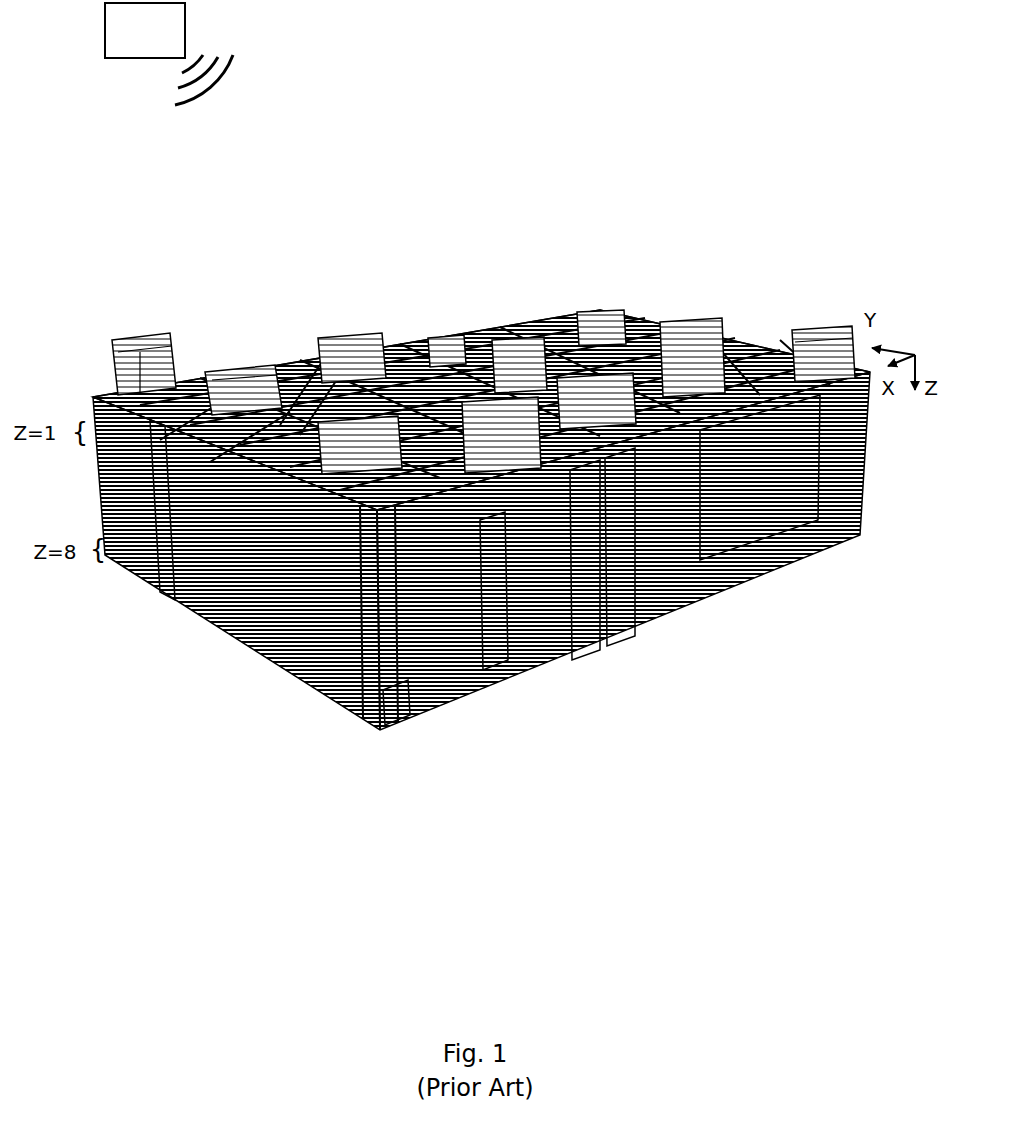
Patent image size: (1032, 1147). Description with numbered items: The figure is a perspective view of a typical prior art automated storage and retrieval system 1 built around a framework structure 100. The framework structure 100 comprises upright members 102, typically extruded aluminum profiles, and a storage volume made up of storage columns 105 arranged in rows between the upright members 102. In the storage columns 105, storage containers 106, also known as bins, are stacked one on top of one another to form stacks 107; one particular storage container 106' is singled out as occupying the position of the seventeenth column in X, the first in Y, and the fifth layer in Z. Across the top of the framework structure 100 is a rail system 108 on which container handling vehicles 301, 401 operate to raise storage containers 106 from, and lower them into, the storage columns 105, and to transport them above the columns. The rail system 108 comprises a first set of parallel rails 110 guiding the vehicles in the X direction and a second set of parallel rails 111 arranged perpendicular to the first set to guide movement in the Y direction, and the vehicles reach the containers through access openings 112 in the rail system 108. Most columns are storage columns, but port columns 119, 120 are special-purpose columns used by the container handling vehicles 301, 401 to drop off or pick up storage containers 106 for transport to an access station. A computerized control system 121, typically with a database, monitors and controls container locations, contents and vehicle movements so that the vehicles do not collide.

The automated storage and retrieval system 1 is at (152, 212).
The framework structure 100 is at (589, 246).
The upright members 102 is at (320, 683).
The storage columns 105 is at (208, 617).
The storage containers 106 is at (446, 757).
The storage container 106' is at (517, 633).
The stacks 107 is at (722, 452).
The rail system 108 is at (650, 335).
The first set of parallel rails 110 is at (278, 363).
The second set of parallel rails 111 is at (302, 360).
The access openings 112 is at (775, 350).
The port column 119 is at (580, 632).
The port column 120 is at (623, 618).
The control system 121 is at (169, 54).
The container handling vehicle 301 is at (233, 367).
The container handling vehicle 401 is at (140, 340).